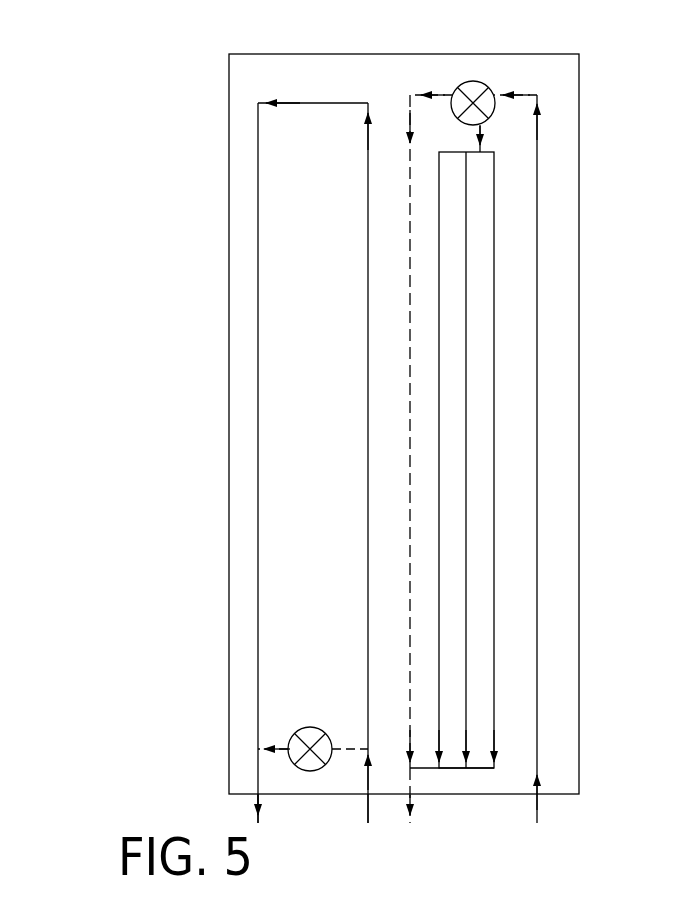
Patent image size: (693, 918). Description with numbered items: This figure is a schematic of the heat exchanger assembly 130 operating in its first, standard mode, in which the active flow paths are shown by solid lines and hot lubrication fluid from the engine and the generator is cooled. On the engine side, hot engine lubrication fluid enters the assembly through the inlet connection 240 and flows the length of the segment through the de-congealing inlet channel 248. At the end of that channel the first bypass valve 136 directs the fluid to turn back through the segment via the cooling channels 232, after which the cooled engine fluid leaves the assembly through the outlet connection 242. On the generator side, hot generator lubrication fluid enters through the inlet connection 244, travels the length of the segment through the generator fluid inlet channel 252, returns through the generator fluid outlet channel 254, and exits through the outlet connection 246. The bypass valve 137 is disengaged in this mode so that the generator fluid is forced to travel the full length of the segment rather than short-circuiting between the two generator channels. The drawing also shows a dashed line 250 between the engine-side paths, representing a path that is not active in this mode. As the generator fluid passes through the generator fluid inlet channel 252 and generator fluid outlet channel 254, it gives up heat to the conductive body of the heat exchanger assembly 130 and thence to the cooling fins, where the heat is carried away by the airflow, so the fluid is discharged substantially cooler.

The heat exchanger assembly 130 is at (597, 421).
The first bypass valve 136 is at (470, 81).
The bypass valve 137 is at (308, 728).
The cooling channels 232 is at (439, 290).
The inlet connection 240 is at (537, 805).
The outlet connection 242 is at (412, 800).
The inlet connection 244 is at (368, 812).
The outlet connection 246 is at (262, 800).
The de-congealing inlet channel 248 is at (537, 547).
The bypass line 250 is at (410, 440).
The generator fluid inlet channel 252 is at (368, 533).
The generator fluid outlet channel 254 is at (258, 631).